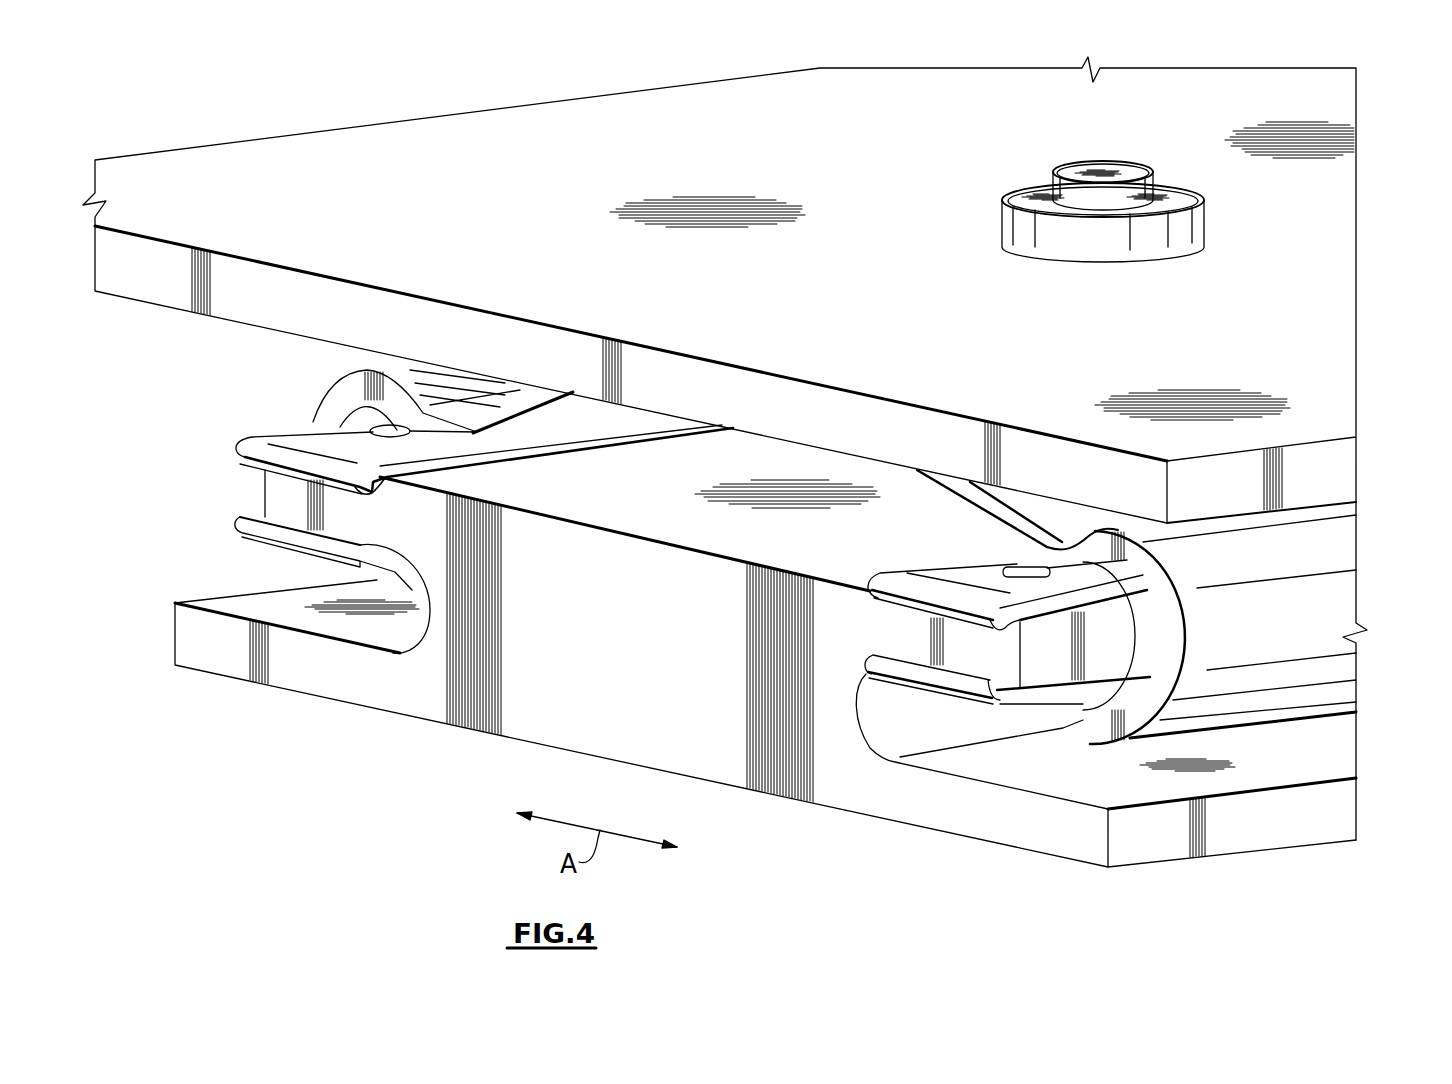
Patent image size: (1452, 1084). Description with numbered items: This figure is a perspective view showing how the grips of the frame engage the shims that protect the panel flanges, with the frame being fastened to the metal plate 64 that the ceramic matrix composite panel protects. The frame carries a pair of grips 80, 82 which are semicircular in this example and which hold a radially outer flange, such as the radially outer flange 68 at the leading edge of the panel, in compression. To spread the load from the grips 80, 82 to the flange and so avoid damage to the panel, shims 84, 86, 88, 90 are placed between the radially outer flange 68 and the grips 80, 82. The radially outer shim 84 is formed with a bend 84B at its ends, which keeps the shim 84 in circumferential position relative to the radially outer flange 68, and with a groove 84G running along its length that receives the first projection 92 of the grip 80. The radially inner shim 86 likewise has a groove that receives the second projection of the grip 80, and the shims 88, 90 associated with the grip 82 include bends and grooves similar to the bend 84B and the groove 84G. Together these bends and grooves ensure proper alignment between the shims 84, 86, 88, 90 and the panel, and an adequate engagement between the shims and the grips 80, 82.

The plate 64 is at (404, 119).
The grip 80 is at (635, 430).
The grip 82 is at (1360, 560).
The radially outer shim 84 is at (315, 432).
The groove 84G is at (390, 430).
The bend 84B is at (265, 444).
The radially outer flange 68 is at (265, 493).
The radially inner shim 86 is at (332, 555).
The shim 88 is at (1022, 588).
The shim 90 is at (1037, 697).
The first projection 92 is at (432, 427).